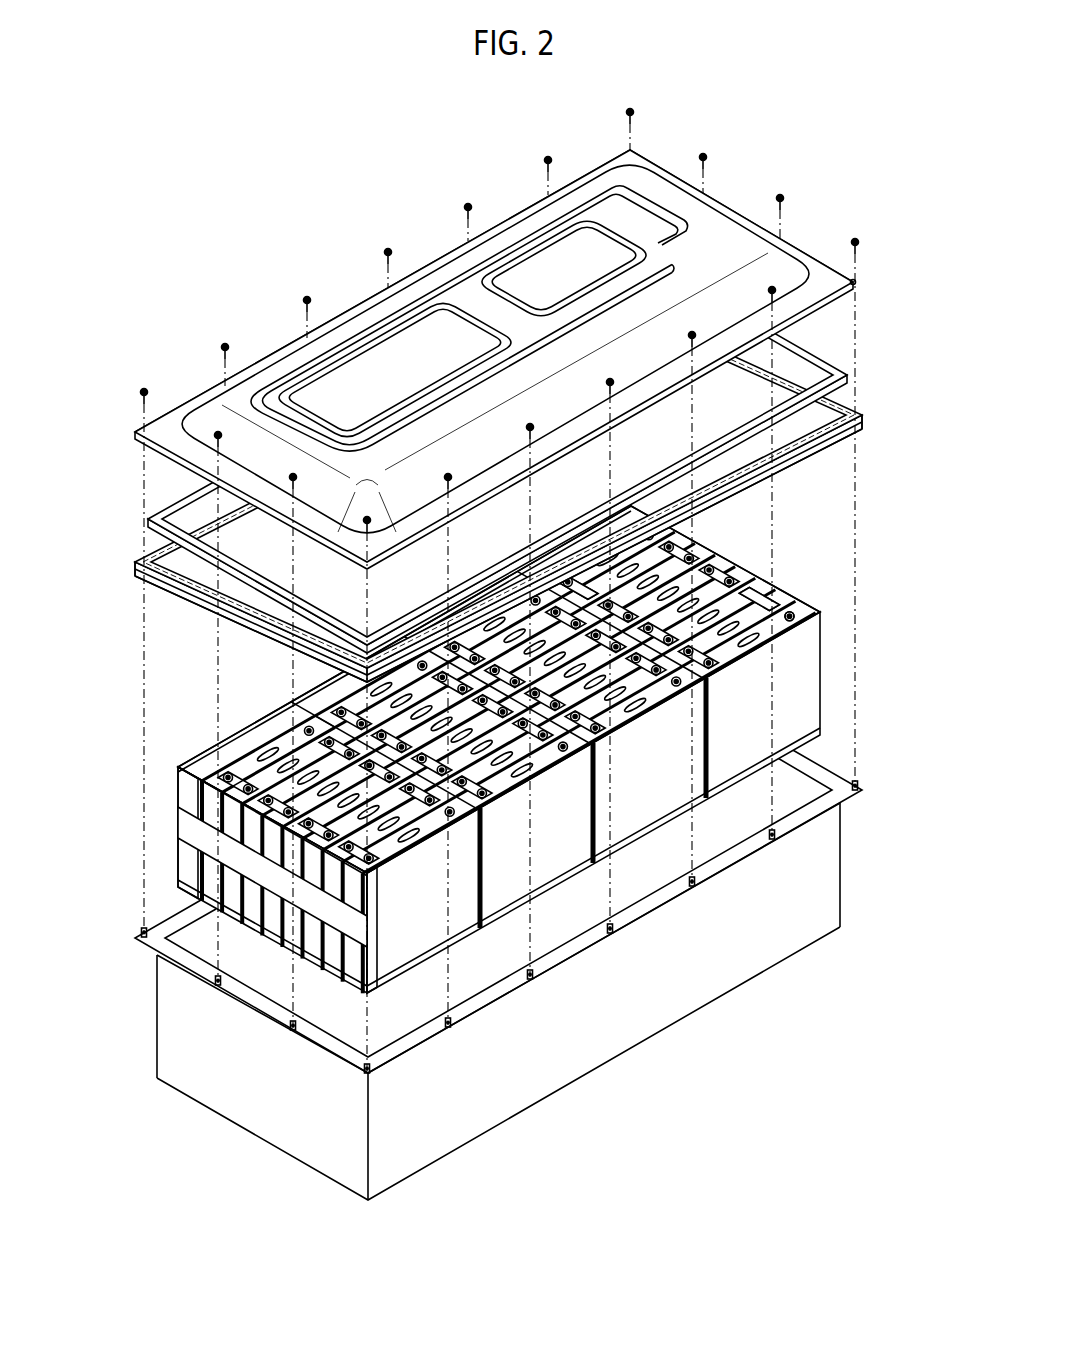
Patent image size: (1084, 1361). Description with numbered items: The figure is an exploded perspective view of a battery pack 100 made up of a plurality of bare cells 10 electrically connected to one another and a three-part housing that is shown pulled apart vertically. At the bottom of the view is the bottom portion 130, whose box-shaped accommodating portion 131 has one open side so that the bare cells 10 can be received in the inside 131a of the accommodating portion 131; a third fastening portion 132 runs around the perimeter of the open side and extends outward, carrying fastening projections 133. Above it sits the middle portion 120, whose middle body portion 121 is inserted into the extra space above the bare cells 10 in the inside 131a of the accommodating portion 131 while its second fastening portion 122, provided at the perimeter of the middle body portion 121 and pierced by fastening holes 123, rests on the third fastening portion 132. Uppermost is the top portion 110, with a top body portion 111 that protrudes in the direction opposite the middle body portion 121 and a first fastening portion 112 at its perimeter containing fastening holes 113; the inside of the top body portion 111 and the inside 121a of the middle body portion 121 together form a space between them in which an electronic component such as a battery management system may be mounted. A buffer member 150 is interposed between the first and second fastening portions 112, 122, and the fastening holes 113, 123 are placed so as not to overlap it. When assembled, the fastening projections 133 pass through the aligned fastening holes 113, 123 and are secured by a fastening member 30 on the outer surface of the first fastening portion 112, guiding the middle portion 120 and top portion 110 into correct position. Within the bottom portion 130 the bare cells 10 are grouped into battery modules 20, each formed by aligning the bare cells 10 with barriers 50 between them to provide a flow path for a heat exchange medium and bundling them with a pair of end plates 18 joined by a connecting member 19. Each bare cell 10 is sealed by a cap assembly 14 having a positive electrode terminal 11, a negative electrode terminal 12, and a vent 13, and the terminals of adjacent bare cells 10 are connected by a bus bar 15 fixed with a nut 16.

The bare cell 10 is at (340, 955).
The positive electrode terminal 11 is at (806, 592).
The negative electrode terminal 12 is at (727, 650).
The vent 13 is at (605, 555).
The cap assembly 14 is at (572, 552).
The bus bar 15 is at (796, 603).
The nut 16 is at (785, 598).
The end plate 18 is at (205, 752).
The connecting member 19 is at (180, 823).
The battery module 20 is at (252, 703).
The fastening member 30 is at (706, 155).
The barrier 50 is at (300, 943).
The battery pack 100 is at (501, 655).
The top portion 110 is at (196, 374).
The top body portion 111 is at (708, 228).
The first fastening portion 112 is at (824, 296).
The fastening hole 113 is at (853, 280).
The middle portion 120 is at (176, 616).
The middle body portion 121 is at (712, 468).
The inside of the middle body portion 121a is at (752, 447).
The second fastening portion 122 is at (852, 428).
The fastening hole 123 is at (705, 512).
The bottom portion 130 is at (148, 907).
The accommodating portion 131 is at (468, 980).
The inside of the accommodating portion 131a is at (550, 925).
The third fastening portion 132 is at (405, 1045).
The fastening projection 133 is at (453, 1013).
The buffer member 150 is at (842, 376).